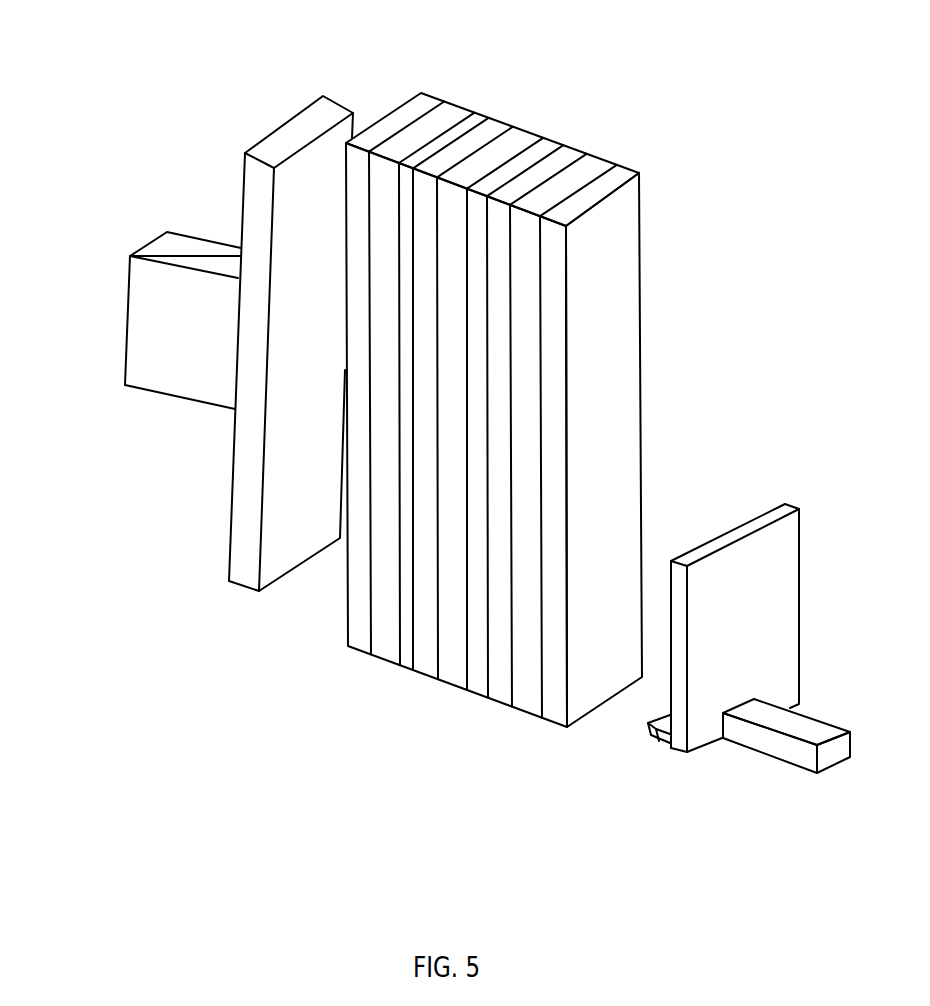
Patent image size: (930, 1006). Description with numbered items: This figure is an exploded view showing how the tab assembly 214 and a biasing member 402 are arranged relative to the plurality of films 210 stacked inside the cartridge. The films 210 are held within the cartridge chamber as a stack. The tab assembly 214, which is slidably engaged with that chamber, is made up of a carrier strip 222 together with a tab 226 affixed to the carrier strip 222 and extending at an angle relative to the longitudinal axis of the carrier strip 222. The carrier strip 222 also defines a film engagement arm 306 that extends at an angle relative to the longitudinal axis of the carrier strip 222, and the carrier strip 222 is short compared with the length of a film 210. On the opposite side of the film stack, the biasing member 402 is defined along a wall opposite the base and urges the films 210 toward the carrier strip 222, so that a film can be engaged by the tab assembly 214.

The films 210 is at (592, 147).
The biasing member 402 is at (173, 395).
The carrier strip 222 is at (793, 507).
The tab 226 is at (812, 722).
The film engagement arm 306 is at (653, 737).
The tab assembly 214 is at (703, 643).